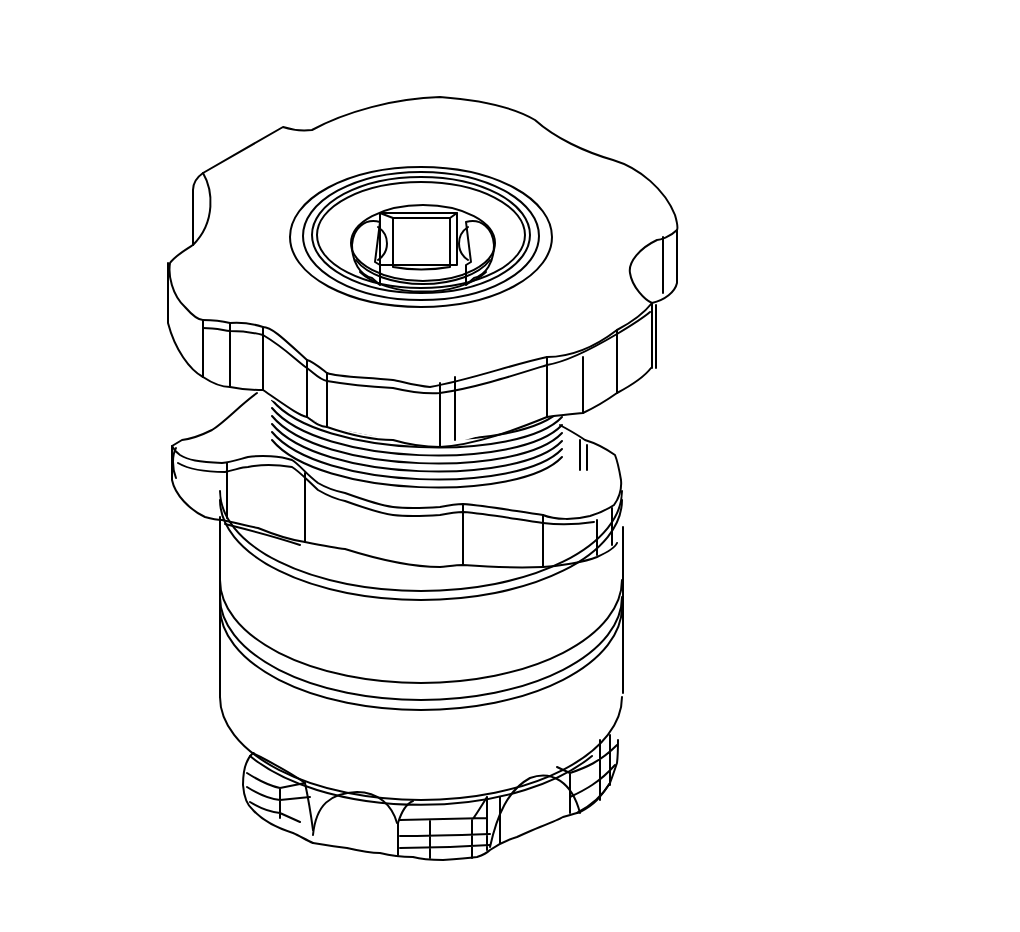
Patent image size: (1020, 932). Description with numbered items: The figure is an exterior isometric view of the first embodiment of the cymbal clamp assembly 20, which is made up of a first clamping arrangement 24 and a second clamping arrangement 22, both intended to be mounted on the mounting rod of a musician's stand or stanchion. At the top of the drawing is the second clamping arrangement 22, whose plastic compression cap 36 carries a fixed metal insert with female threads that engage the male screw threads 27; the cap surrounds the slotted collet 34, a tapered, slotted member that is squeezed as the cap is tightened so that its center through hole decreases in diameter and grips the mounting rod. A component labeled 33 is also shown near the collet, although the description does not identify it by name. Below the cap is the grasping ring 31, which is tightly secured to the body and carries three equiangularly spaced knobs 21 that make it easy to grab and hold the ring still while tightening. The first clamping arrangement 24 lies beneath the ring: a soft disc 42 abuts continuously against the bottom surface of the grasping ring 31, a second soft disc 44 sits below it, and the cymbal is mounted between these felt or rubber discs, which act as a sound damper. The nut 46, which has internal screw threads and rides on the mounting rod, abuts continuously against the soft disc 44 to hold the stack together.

The cymbal clamp assembly 20 is at (755, 362).
The knobs 21 is at (213, 433).
The second clamping arrangement 22 is at (622, 446).
The first clamping arrangement 24 is at (622, 743).
The male screw threads 27 is at (478, 473).
The grasping ring 31 is at (365, 527).
The retaining clip 33 is at (460, 217).
The slotted collet 34 is at (425, 253).
The plastic compression cap 36 is at (635, 235).
The soft disc 42 is at (617, 583).
The soft disc 44 is at (617, 665).
The nut 46 is at (302, 833).